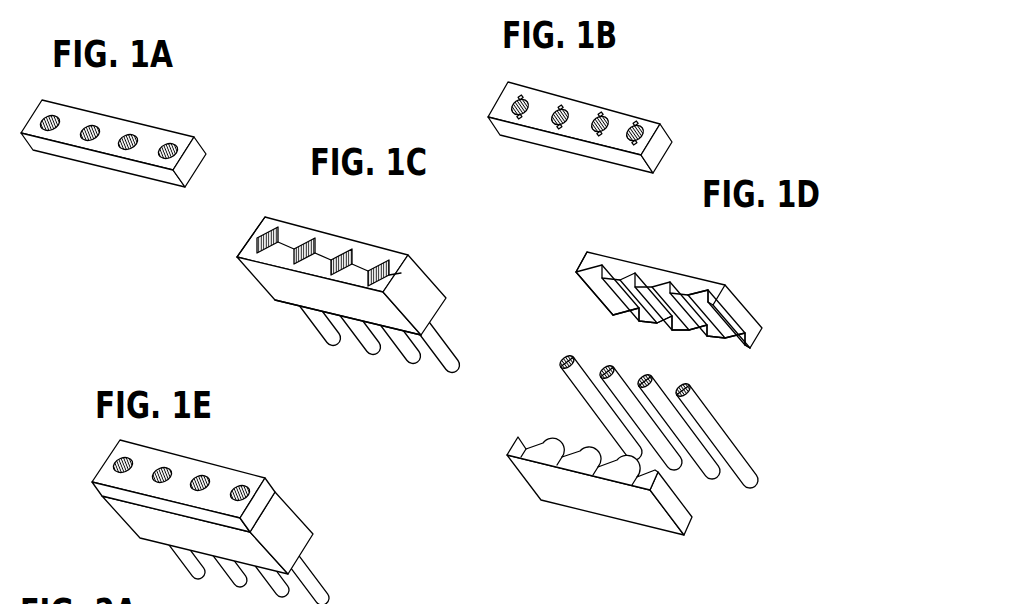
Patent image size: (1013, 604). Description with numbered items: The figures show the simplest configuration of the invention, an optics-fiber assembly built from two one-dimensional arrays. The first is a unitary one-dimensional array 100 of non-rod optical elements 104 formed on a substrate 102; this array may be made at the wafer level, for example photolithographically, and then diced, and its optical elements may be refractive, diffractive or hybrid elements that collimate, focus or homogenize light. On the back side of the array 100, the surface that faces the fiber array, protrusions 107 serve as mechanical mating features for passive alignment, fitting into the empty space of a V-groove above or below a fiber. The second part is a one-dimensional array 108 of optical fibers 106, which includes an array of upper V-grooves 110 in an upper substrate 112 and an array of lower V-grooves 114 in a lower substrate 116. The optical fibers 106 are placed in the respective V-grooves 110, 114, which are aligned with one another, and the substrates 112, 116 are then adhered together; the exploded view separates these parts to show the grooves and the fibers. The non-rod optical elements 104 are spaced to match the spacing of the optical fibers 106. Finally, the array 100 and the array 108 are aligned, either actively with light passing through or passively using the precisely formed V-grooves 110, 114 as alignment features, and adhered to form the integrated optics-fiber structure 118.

In FIG. 1A, the one-dimensional array 100 is at (152, 137).
In FIG. 1B, the one-dimensional array 100 is at (619, 117).
In FIG. 1E, the one-dimensional array 100 is at (205, 511).
In FIG. 1A, the substrate 102 is at (206, 161).
In FIG. 1B, the substrate 102 is at (671, 152).
In FIG. 1A, the non-rod optical elements 104 is at (173, 145).
In FIG. 1B, the non-rod optical elements 104 is at (588, 103).
In FIG. 1C, the optical fibers 106 is at (460, 340).
In FIG. 1D, the optical fibers 106 is at (737, 447).
In FIG. 1E, the optical fibers 106 is at (236, 554).
In FIG. 1B, the protrusions 107 is at (598, 120).
In FIG. 1C, the one-dimensional array of optical fibers 108 is at (438, 278).
In FIG. 1D, the one-dimensional array of optical fibers 108 is at (681, 282).
In FIG. 1E, the one-dimensional array of optical fibers 108 is at (301, 513).
In FIG. 1C, the upper V-grooves 110 is at (397, 273).
In FIG. 1D, the upper V-grooves 110 is at (720, 284).
In FIG. 1C, the upper substrate 112 is at (343, 238).
In FIG. 1D, the upper substrate 112 is at (670, 270).
In FIG. 1C, the lower V-grooves 114 is at (242, 259).
In FIG. 1D, the lower V-grooves 114 is at (535, 441).
In FIG. 1C, the lower substrate 116 is at (268, 297).
In FIG. 1D, the lower substrate 116 is at (532, 468).
In FIG. 1E, the integrated optics-fiber structure 118 is at (109, 443).